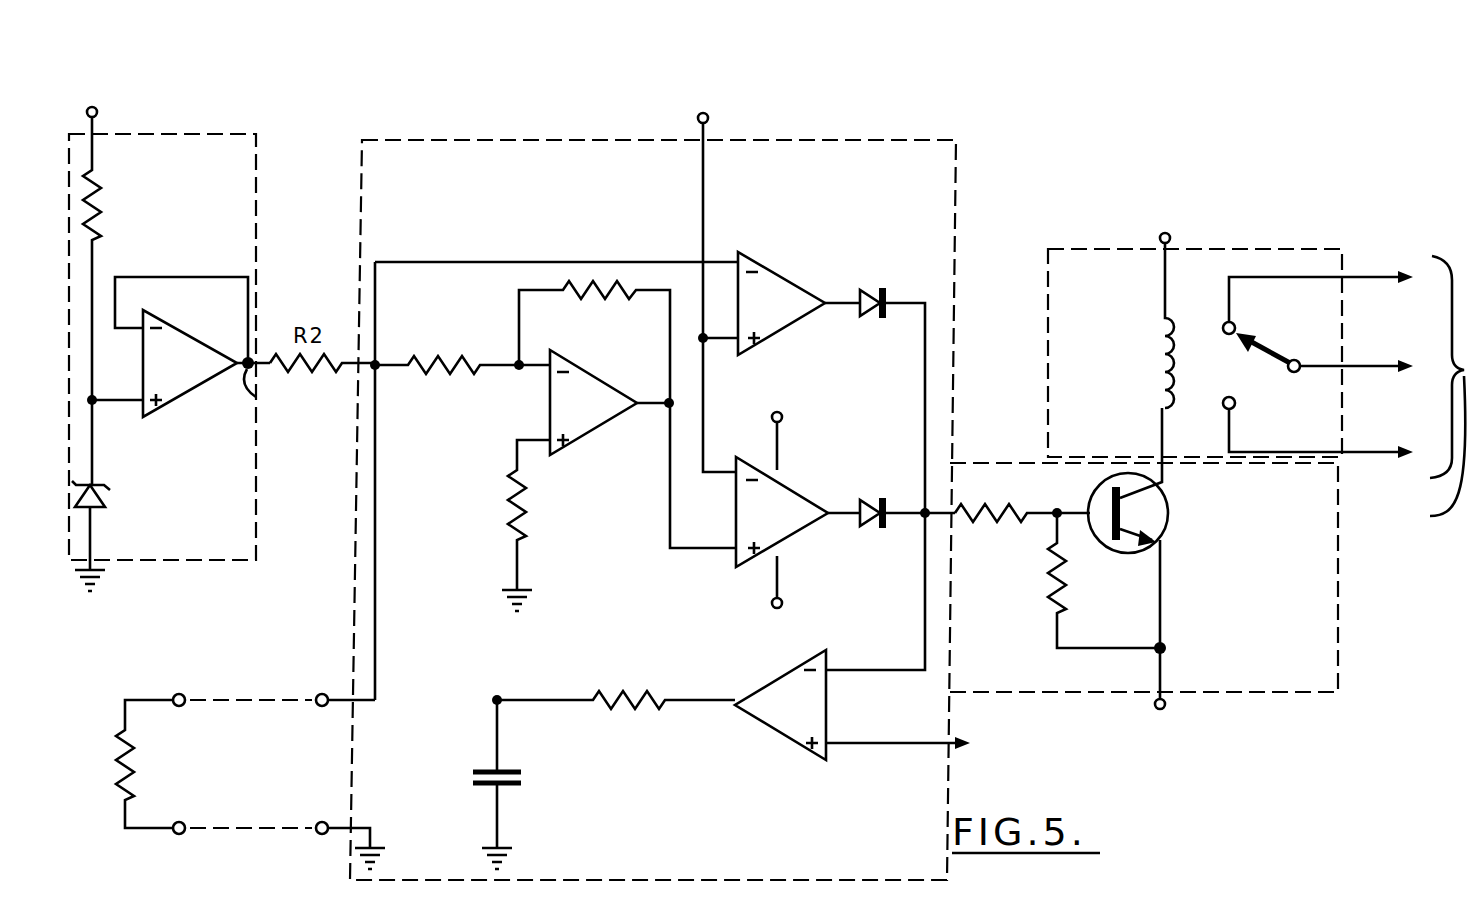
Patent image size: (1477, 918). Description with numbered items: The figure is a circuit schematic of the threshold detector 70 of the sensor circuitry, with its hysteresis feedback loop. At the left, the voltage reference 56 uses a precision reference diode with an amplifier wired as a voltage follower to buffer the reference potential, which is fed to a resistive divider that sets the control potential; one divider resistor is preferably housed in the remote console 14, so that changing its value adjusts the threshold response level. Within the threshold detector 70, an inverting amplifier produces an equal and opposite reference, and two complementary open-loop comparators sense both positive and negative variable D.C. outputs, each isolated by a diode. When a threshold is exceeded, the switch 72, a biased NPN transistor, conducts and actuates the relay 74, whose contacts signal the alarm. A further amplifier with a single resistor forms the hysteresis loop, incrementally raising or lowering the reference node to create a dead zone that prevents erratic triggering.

The voltage reference 56 is at (187, 134).
The threshold detector 70 is at (872, 142).
The switch 72 is at (1325, 692).
The relay 74 is at (1333, 226).
The console 14 is at (254, 690).